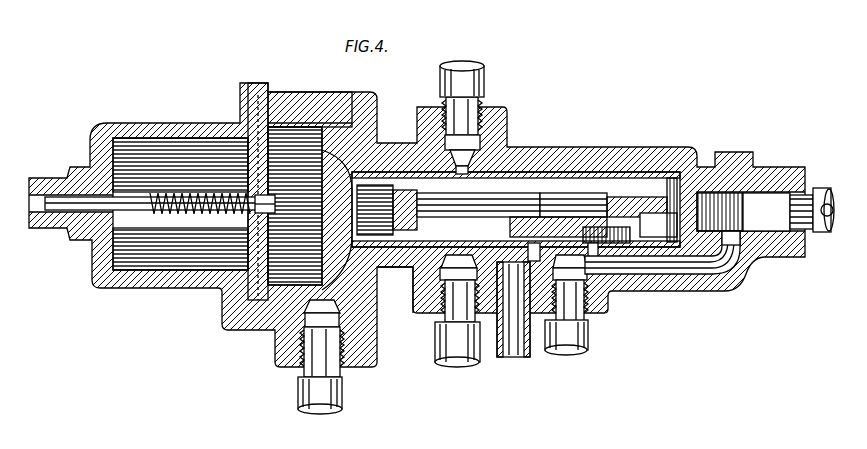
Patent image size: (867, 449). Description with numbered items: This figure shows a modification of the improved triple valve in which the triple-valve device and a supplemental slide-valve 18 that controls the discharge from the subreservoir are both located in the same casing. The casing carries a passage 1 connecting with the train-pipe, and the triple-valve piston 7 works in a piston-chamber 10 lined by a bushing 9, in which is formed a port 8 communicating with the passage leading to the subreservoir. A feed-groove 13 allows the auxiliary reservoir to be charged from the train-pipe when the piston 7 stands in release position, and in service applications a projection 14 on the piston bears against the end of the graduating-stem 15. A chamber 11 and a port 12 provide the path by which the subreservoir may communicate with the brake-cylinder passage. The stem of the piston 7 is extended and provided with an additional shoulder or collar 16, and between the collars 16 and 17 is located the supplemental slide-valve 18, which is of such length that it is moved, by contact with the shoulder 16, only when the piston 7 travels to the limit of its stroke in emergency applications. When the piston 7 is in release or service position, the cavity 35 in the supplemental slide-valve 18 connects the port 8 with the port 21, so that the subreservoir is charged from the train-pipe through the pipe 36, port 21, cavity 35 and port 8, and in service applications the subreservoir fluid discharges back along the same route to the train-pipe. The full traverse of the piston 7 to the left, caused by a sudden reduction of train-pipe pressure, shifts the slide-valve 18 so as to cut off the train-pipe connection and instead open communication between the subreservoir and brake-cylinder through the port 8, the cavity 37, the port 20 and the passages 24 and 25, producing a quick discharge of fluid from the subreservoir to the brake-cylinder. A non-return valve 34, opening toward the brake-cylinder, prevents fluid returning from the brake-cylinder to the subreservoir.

The passage 1 is at (462, 117).
The triple-valve piston 7 is at (327, 220).
The port 8 is at (535, 258).
The bushing 9 is at (308, 124).
The piston-chamber 10 is at (295, 206).
The chamber 11 is at (358, 250).
The port 12 is at (440, 240).
The feed-groove 13 is at (330, 127).
The projection 14 is at (421, 275).
The graduating-stem 15 is at (159, 203).
The shoulder or collar 16 is at (658, 210).
The collar 17 is at (448, 210).
The supplemental slide-valve 18 is at (572, 220).
The port 20 is at (592, 244).
The port 21 is at (518, 238).
The passage 24 is at (662, 254).
The passage 25 is at (765, 210).
The non-return valve 34 is at (740, 245).
The cavity 35 is at (558, 226).
The pipe 36 is at (518, 352).
The cavity 37 is at (610, 230).